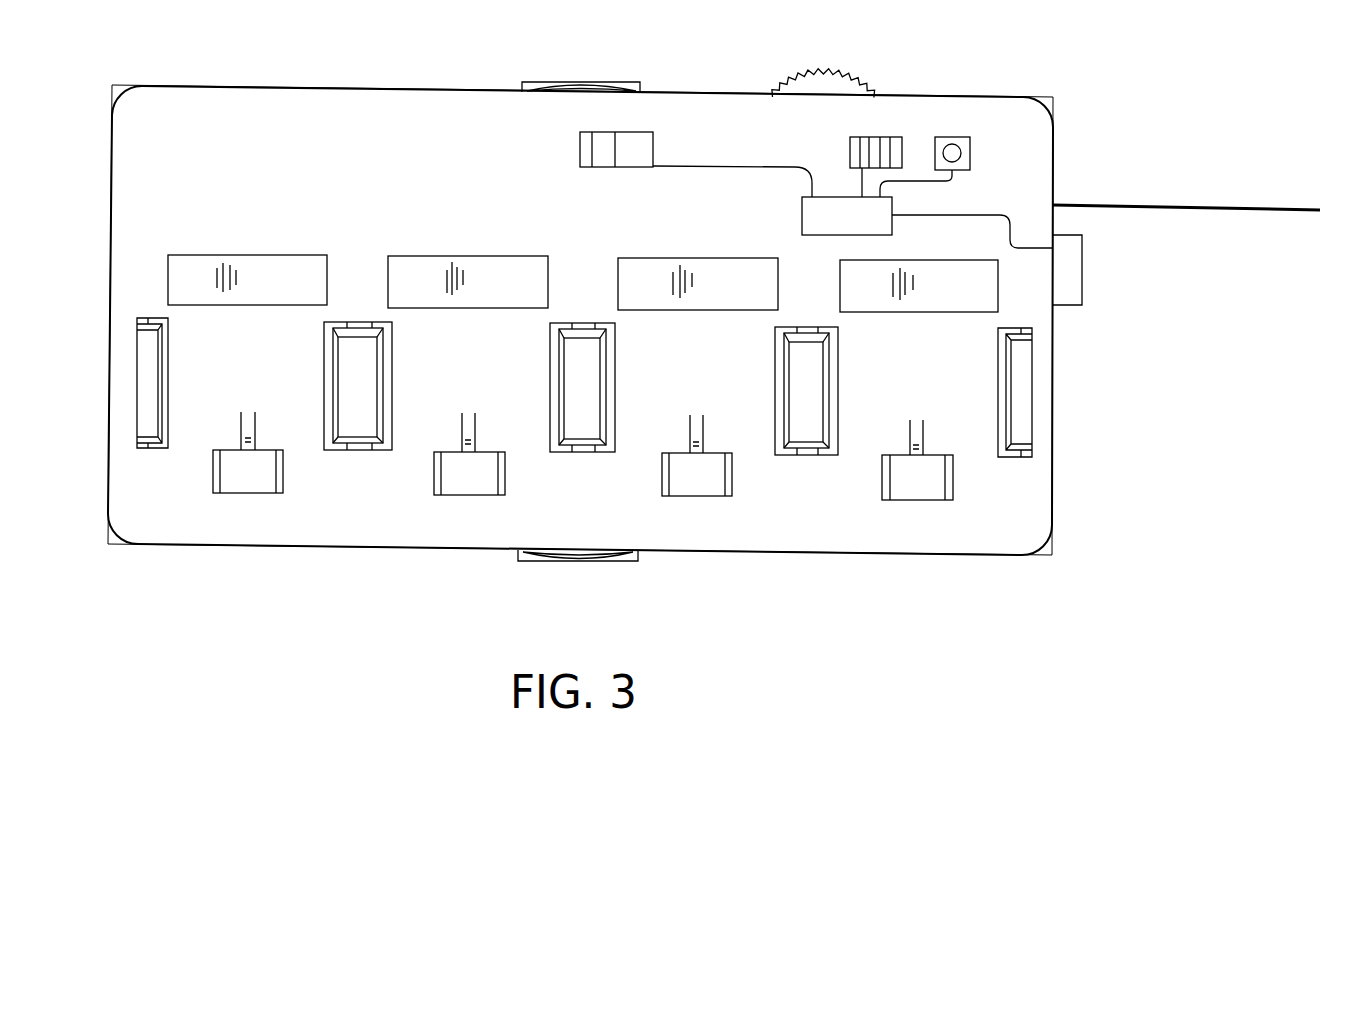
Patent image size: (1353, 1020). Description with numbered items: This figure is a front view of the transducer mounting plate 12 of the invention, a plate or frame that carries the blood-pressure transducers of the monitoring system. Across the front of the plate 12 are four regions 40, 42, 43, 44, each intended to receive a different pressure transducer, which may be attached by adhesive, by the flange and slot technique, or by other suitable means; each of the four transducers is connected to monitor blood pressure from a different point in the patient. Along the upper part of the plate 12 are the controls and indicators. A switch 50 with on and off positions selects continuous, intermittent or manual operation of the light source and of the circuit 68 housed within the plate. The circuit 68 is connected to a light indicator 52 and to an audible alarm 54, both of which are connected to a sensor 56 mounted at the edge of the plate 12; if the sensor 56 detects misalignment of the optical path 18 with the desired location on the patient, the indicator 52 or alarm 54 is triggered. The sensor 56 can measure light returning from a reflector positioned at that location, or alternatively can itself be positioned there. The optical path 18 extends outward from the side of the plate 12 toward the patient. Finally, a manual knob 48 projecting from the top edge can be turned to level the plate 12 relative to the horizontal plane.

The transducer mounting plate 12 is at (973, 540).
The optical path 18 is at (1207, 207).
The region 40 is at (898, 388).
The region 42 is at (711, 381).
The region 43 is at (483, 379).
The region 44 is at (258, 377).
The manual knob 48 is at (795, 82).
The switch 50 is at (580, 150).
The light indicator 52 is at (970, 153).
The audible alarm 54 is at (850, 140).
The sensor 56 is at (1072, 306).
The circuit 68 is at (802, 212).